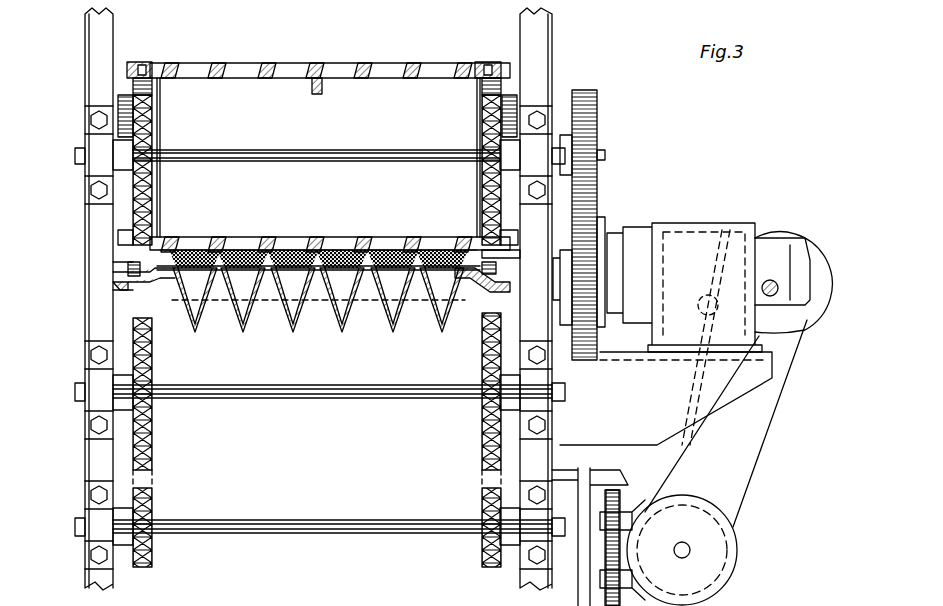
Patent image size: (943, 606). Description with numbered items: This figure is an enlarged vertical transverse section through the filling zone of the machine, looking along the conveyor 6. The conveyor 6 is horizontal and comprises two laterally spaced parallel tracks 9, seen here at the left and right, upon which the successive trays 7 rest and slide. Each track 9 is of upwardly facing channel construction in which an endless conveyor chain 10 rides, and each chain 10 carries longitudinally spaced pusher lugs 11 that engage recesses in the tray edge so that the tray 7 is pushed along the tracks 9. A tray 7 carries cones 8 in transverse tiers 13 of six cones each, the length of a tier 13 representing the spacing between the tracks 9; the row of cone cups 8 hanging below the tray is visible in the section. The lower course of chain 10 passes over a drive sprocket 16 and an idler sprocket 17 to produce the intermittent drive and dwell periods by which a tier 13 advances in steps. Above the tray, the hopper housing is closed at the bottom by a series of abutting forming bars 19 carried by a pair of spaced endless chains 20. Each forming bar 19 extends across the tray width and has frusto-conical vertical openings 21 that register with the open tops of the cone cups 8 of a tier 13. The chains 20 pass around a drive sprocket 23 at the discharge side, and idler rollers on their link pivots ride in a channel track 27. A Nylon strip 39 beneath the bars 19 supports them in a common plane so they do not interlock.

The conveyor 6 is at (128, 272).
The tray 7 is at (350, 325).
The cone 8 is at (190, 314).
The track 9 is at (140, 282).
The conveyor chain 10 is at (146, 290).
The pusher lug 11 is at (505, 252).
The tier 13 is at (242, 336).
The drive sprocket 16 is at (482, 412).
The idler sprocket 17 is at (482, 493).
The forming bar 19 is at (356, 64).
The endless chain 20 is at (131, 58).
The frusto-conical vertical opening 21 is at (335, 240).
The drive sprocket 23 is at (153, 130).
The channel track 27 is at (128, 240).
The Nylon strip 39 is at (324, 87).